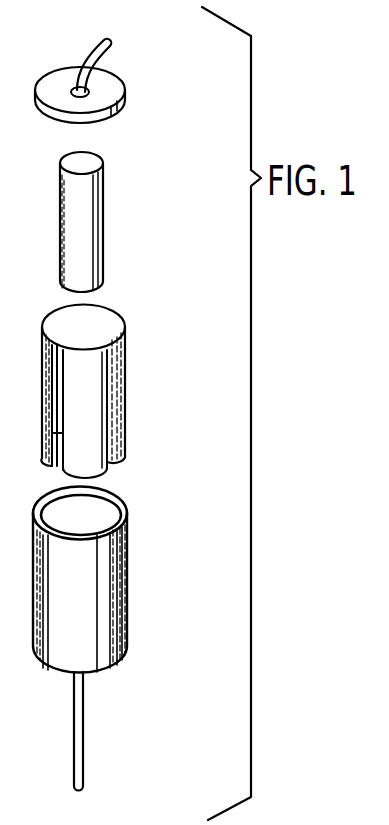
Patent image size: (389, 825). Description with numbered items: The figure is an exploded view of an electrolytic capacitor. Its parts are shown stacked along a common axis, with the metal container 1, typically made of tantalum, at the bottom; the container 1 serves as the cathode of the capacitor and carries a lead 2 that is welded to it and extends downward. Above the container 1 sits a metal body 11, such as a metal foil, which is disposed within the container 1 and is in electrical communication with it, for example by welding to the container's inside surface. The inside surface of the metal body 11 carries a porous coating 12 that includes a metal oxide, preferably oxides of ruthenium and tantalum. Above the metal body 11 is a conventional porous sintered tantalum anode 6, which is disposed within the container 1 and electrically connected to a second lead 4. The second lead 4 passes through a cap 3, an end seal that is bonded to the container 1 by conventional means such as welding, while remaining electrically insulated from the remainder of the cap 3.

The metal container 1 is at (103, 587).
The lead 2 is at (80, 740).
The cap 3 is at (113, 117).
The second lead 4 is at (103, 51).
The porous sintered tantalum anode 6 is at (90, 223).
The metal body 11 is at (93, 418).
The porous coating 12 is at (97, 322).